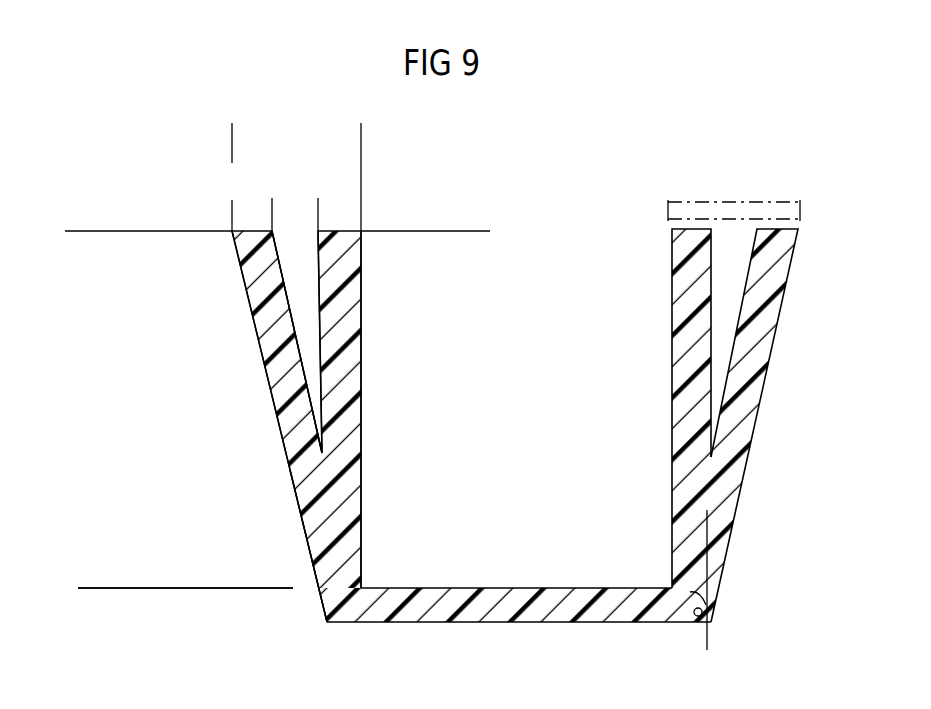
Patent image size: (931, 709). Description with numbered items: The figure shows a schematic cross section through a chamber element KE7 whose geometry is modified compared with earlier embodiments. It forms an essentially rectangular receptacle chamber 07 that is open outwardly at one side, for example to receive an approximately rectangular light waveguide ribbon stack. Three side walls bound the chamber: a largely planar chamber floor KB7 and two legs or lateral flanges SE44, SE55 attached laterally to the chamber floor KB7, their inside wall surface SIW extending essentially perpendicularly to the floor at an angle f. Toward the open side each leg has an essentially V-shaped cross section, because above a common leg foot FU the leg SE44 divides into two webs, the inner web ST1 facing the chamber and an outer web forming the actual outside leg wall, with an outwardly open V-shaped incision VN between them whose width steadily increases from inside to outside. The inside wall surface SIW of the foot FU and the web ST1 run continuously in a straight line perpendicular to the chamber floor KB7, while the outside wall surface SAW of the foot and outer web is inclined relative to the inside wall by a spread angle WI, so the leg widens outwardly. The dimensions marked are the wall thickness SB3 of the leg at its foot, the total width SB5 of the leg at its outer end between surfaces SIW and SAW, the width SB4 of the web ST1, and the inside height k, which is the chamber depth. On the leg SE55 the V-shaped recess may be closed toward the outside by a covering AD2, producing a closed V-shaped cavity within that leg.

The total cross sectional width of the leg SB5 is at (361, 143).
The cross sectional width of the leg branch ST1 SB4 is at (382, 212).
The V-shaped incision VN is at (300, 283).
The web ST1 is at (343, 307).
The leg SE44 is at (260, 393).
The outside wall surface SAW is at (283, 443).
The inside wall surface SIW is at (363, 413).
The inside height k is at (482, 231).
The leg foot FU is at (308, 498).
The wall thickness of the leg SB3 is at (263, 572).
The chamber element KE7 is at (210, 615).
The chamber floor KB7 is at (425, 605).
The receptacle chamber 07 is at (606, 280).
The covering AD2 is at (772, 170).
The leg SE55 is at (751, 337).
The angle between inside leg wall surface and chamber floor f is at (670, 532).
The spread angle WI is at (710, 587).